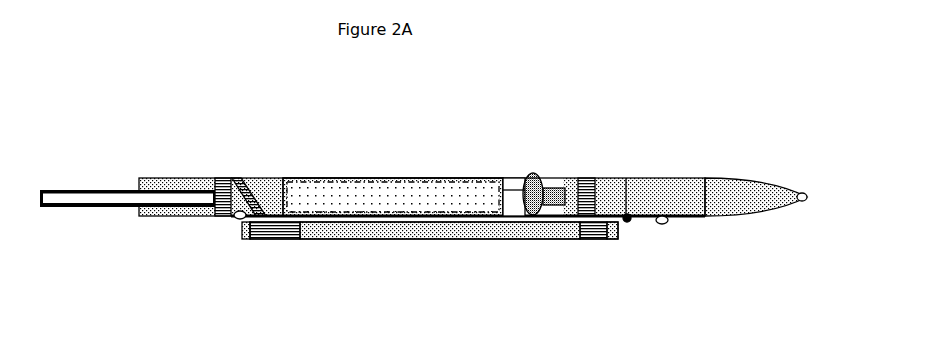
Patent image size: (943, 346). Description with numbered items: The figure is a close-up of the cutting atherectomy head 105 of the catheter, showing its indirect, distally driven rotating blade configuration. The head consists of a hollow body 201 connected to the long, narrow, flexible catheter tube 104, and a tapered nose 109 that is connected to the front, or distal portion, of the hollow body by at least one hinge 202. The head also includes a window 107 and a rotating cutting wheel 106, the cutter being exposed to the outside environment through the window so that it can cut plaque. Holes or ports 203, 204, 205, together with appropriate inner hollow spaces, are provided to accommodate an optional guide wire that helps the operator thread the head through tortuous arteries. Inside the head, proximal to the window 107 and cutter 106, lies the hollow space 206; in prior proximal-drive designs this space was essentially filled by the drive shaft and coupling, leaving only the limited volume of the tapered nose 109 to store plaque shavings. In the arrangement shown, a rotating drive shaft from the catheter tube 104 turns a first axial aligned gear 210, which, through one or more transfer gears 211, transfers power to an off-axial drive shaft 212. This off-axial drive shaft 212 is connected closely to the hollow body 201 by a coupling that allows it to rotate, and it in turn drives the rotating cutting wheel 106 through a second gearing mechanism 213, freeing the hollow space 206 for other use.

The catheter tube 104 is at (110, 180).
The cutting atherectomy head 105 is at (112, 307).
The rotating cutting wheel 106 is at (535, 172).
The window 107 is at (518, 180).
The tapered nose 109 is at (765, 176).
The hollow body 201 is at (415, 166).
The hinge 202 is at (630, 224).
The hole or port 203 is at (233, 227).
The hole or port 204 is at (663, 225).
The hole or port 205 is at (815, 198).
The hollow space 206 is at (348, 196).
The first axial aligned gear 210 is at (222, 176).
The transfer gear 211 is at (235, 176).
The off-axial drive shaft 212 is at (418, 247).
The second gearing mechanism 213 is at (597, 176).